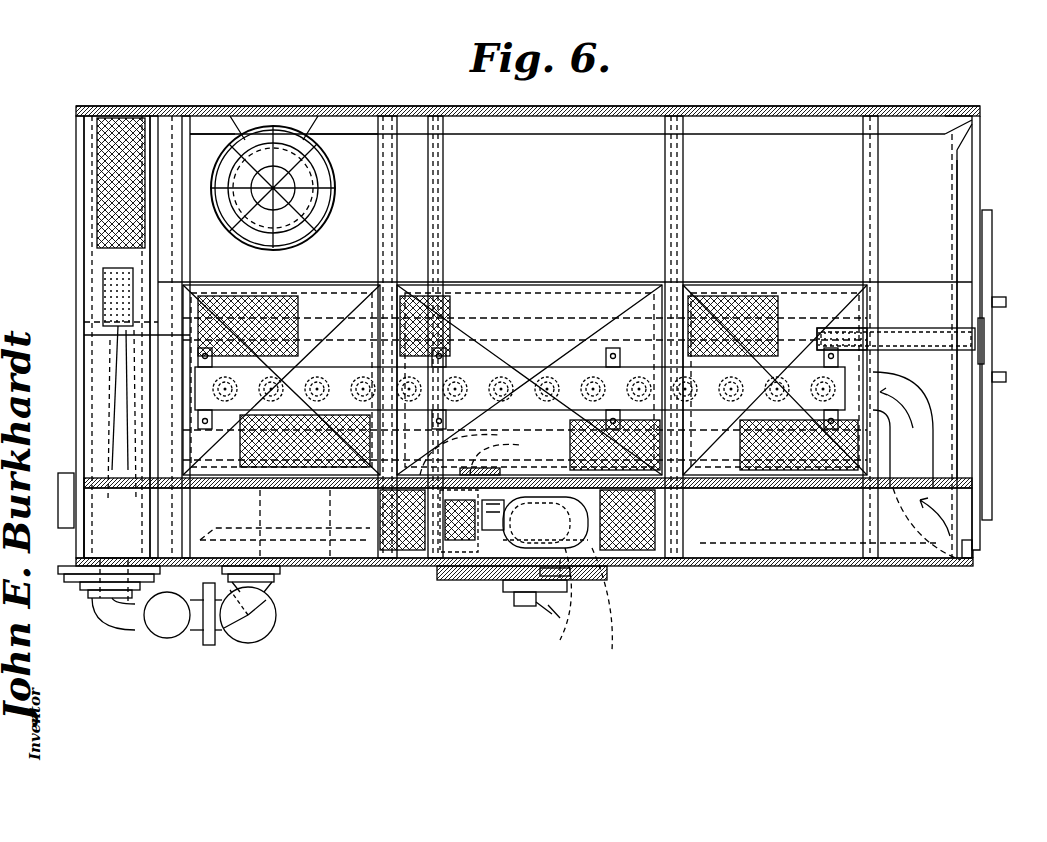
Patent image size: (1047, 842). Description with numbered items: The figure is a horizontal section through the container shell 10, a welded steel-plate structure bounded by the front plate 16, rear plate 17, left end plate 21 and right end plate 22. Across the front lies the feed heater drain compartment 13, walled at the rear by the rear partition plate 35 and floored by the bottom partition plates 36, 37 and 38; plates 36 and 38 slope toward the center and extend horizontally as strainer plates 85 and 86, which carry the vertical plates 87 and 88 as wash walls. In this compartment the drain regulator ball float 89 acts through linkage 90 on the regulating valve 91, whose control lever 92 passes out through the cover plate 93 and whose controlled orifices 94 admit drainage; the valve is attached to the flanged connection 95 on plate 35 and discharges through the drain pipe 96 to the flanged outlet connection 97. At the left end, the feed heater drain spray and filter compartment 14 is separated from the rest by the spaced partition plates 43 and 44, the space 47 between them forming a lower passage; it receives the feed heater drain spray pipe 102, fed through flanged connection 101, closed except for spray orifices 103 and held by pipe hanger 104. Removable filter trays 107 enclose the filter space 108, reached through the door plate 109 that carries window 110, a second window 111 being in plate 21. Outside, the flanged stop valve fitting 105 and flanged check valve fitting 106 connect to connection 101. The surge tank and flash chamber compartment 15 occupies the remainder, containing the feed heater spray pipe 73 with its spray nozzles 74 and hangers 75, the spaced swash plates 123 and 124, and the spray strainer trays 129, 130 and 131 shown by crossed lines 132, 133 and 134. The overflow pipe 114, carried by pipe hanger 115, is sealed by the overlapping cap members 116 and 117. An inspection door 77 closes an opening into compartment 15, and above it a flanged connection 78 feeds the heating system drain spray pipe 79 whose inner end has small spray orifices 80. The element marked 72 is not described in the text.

The container shell 10 is at (733, 116).
The feed heater drain compartment 13 is at (792, 528).
The feed heater drain spray and filter compartment 14 is at (110, 232).
The surge tank and flash chamber compartment 15 is at (945, 200).
The front plate 16 is at (866, 566).
The rear plate 17 is at (606, 110).
The left end plate 21 is at (84, 322).
The right end plate 22 is at (980, 122).
The rear partition plate 35 is at (346, 516).
The bottom partition plate 36 is at (356, 494).
The bottom partition plate 37 is at (494, 580).
The bottom partition plate 38 is at (748, 528).
The partition plate 43 is at (168, 120).
The partition plate 44 is at (188, 126).
The space 47 is at (162, 262).
The return passage 72 is at (982, 526).
The feed heater spray pipe 73 is at (920, 446).
The spray nozzles 74 is at (364, 362).
The hangers 75 is at (490, 324).
The inspection door 77 is at (992, 250).
The flanged connection 78 is at (988, 338).
The heating system drain spray pipe 79 is at (904, 332).
The spray orifices 80 is at (836, 340).
The strainer plate 85 is at (408, 540).
The strainer plate 86 is at (656, 538).
The vertical plate 87 is at (490, 528).
The vertical plate 88 is at (580, 548).
The drain regulator ball float 89 is at (548, 546).
The linkage 90 is at (450, 534).
The regulating valve 91 is at (546, 578).
The control lever 92 is at (553, 612).
The cover plate 93 is at (600, 566).
The controlled orifices 94 is at (522, 510).
The flanged connection 95 is at (536, 480).
The drain pipe 96 is at (262, 520).
The flanged outlet connection 97 is at (276, 570).
The flanged connection 101 is at (110, 598).
The feed heater drain spray pipe 102 is at (106, 364).
The spray orifices 103 is at (104, 290).
The pipe hanger 104 is at (92, 336).
The flanged stop valve fitting 105 is at (262, 624).
The flanged check valve fitting 106 is at (168, 630).
The removable filter trays 107 is at (100, 188).
The filter space 108 is at (126, 398).
The door plate 109 is at (66, 576).
The window 110 is at (90, 594).
The window 111 is at (60, 482).
The overflow pipe 114 is at (300, 130).
The pipe hanger 115 is at (320, 164).
The cap member 116 is at (325, 185).
The cap member 117 is at (320, 214).
The swash plate 123 is at (440, 208).
The swash plate 124 is at (700, 192).
The spray strainer tray 129 is at (318, 290).
The spray strainer tray 130 is at (506, 290).
The spray strainer tray 131 is at (776, 290).
The crossed dot-and-dash lines 132 is at (348, 306).
The crossed dot-and-dash lines 133 is at (568, 352).
The crossed dot-and-dash lines 134 is at (798, 350).